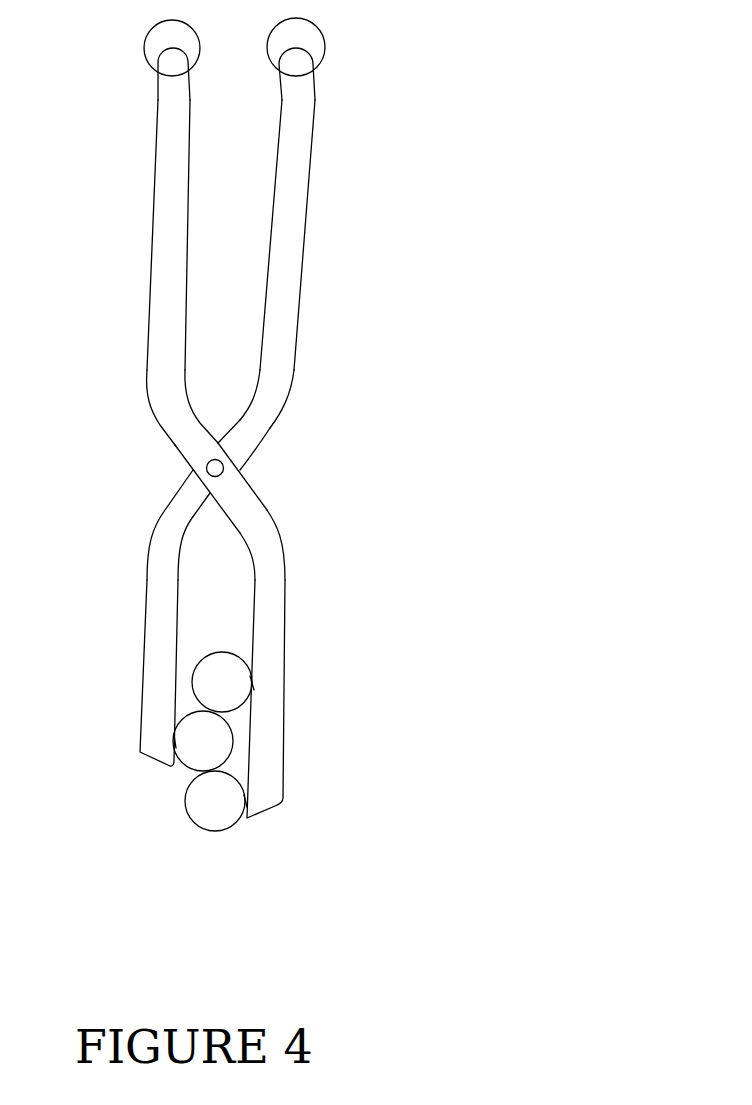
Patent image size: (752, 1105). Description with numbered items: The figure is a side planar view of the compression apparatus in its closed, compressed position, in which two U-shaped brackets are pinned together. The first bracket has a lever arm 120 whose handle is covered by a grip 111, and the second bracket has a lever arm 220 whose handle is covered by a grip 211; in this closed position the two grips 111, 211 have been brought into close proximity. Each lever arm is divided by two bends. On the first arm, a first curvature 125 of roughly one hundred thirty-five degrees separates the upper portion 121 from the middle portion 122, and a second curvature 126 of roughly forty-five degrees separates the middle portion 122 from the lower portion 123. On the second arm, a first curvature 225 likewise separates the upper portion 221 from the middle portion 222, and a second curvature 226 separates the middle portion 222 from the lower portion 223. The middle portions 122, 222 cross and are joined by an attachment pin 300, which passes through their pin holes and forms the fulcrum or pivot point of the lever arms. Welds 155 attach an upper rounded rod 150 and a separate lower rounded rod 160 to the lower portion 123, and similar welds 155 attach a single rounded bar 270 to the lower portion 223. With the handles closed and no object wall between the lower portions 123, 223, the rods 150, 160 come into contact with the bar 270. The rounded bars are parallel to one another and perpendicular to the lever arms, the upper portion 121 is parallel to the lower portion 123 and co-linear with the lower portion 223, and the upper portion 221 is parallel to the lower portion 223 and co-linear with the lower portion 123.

The grip 111 is at (148, 33).
The grip 211 is at (318, 30).
The lever arm 120 is at (167, 62).
The lever arm 220 is at (310, 62).
The upper portion 121 is at (167, 237).
The upper portion 221 is at (293, 237).
The first curvature 125 is at (150, 404).
The first curvature 225 is at (288, 403).
The middle portion 122 is at (192, 438).
The middle portion 222 is at (255, 440).
The attachment pin 300 is at (223, 470).
The second curvature 126 is at (285, 541).
The second curvature 226 is at (147, 542).
The lower portion 123 is at (285, 613).
The lower portion 223 is at (145, 614).
The upper rounded rod 150 is at (222, 682).
The single rounded bar 270 is at (203, 741).
The lower rounded rod 160 is at (215, 801).
The weld 155 is at (253, 683).